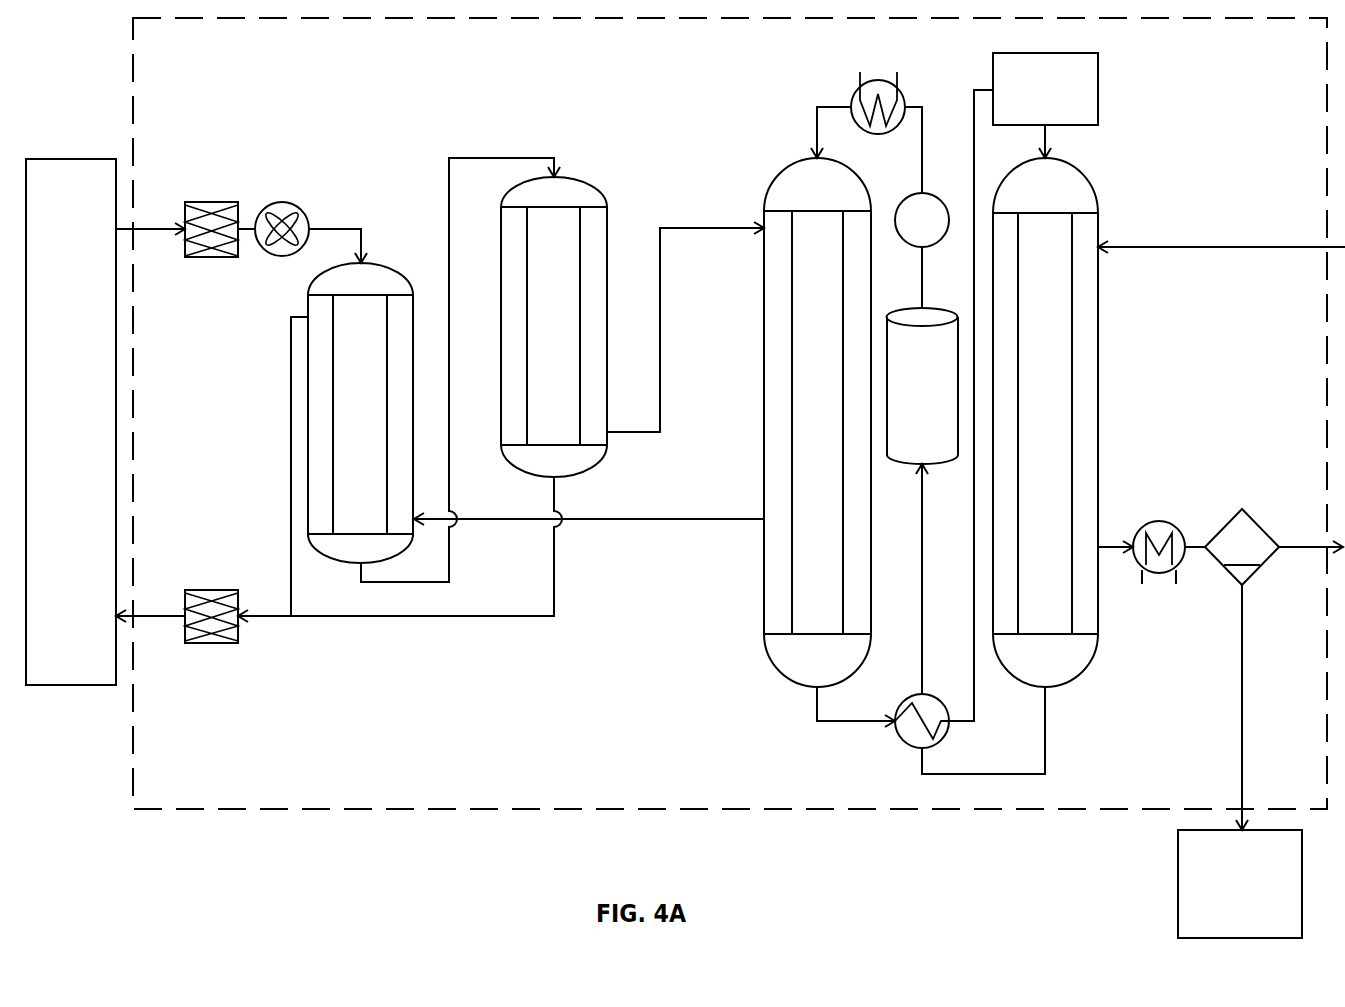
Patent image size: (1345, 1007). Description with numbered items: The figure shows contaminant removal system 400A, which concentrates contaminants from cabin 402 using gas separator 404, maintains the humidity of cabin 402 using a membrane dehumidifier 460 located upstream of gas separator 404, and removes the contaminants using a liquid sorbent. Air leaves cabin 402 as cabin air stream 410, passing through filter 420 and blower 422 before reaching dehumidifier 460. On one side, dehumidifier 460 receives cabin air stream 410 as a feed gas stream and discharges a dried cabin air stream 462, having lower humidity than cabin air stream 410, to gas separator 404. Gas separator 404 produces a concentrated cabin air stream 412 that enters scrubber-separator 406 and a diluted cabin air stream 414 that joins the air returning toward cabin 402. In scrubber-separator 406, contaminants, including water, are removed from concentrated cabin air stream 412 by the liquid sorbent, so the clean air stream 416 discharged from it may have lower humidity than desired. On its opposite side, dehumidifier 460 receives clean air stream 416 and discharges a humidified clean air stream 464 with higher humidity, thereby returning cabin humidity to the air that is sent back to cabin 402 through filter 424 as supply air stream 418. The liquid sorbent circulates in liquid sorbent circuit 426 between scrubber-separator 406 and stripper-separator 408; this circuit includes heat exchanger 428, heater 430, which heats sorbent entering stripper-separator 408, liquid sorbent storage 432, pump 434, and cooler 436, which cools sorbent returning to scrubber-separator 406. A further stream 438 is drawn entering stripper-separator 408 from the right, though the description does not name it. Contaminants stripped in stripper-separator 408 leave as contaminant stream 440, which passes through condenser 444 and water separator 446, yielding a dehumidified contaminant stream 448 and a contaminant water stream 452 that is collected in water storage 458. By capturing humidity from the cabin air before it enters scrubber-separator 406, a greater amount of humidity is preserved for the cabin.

The contaminant removal system 400A is at (187, 80).
The cabin 402 is at (53, 448).
The gas separator 404 is at (536, 337).
The scrubber-separator 406 is at (799, 432).
The stripper-separator 408 is at (1027, 432).
The cabin air stream 410 is at (143, 229).
The concentrated cabin air stream 412 is at (680, 230).
The diluted cabin air stream 414 is at (400, 616).
The clean air stream 416 is at (627, 519).
The supply air stream 418 is at (143, 616).
The filter 420 is at (197, 202).
The blower 422 is at (283, 202).
The filter 424 is at (197, 590).
The liquid sorbent circuit 426 is at (1100, 140).
The heat exchanger 428 is at (905, 742).
The heater 430 is at (1027, 115).
The liquid sorbent storage 432 is at (904, 400).
The pump 434 is at (904, 232).
The cooler 436 is at (900, 85).
The inlet line 438 is at (1205, 247).
The contaminant stream 440 is at (1117, 548).
The condenser 444 is at (1142, 522).
The water separator 446 is at (1242, 509).
The dehumidified contaminant stream 448 is at (1292, 548).
The contaminant water stream 452 is at (1242, 690).
The water storage 458 is at (1222, 926).
The membrane dehumidifier 460 is at (343, 425).
The dried cabin air stream 462 is at (518, 157).
The humidified clean air stream 464 is at (290, 398).